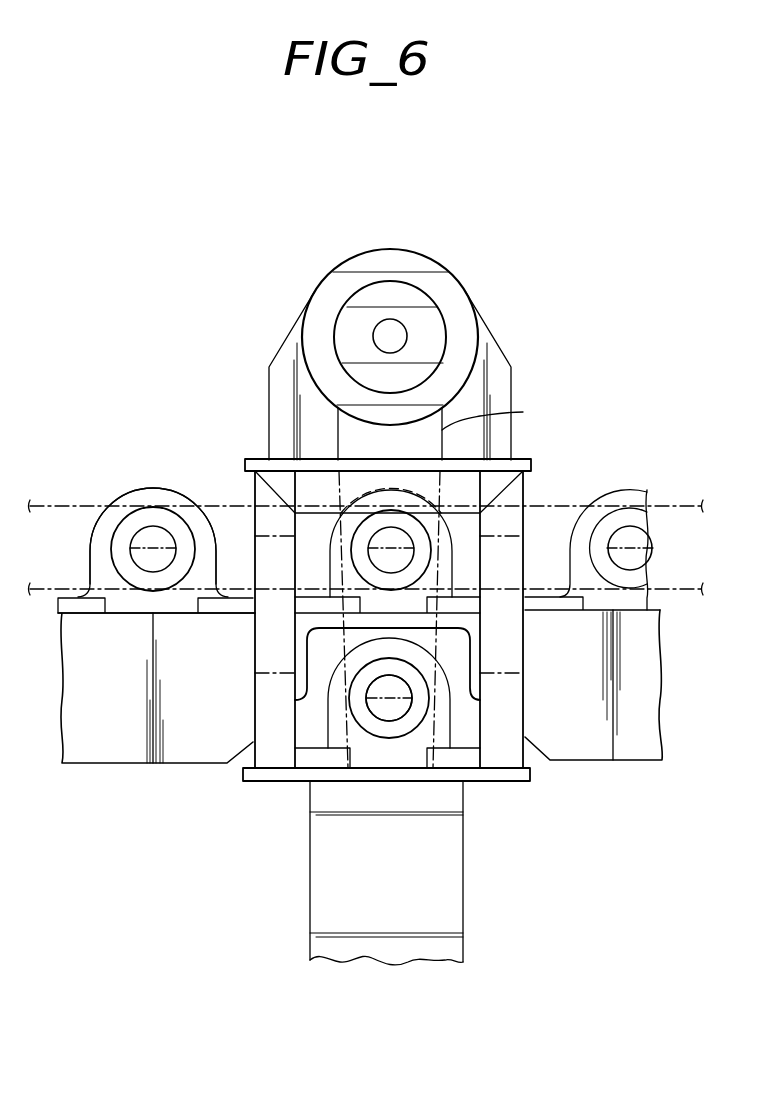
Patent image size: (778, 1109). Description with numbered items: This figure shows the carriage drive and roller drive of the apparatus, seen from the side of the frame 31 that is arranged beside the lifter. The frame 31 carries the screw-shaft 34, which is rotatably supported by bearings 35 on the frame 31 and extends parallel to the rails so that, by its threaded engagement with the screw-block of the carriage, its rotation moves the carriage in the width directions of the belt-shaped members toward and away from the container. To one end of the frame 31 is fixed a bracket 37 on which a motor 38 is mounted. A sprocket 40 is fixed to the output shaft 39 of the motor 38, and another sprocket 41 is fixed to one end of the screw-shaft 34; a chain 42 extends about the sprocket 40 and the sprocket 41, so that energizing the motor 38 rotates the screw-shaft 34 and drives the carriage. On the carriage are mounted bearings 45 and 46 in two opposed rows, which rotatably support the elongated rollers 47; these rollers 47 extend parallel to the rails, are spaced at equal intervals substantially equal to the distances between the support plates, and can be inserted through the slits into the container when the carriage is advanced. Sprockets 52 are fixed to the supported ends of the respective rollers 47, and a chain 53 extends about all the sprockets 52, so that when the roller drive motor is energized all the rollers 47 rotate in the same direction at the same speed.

The frame 31 is at (445, 867).
The screw-shaft 34 is at (392, 710).
The bearings 35 is at (335, 713).
The bracket 37 is at (505, 647).
The motor 38 is at (453, 297).
The output shaft 39 is at (390, 327).
The sprocket 40 is at (360, 297).
The sprocket 41 is at (422, 707).
The chain 42 is at (498, 415).
The bearings 45 is at (130, 490).
The bearings 46 is at (153, 536).
The elongated rollers 47 is at (138, 555).
The sprockets 52 is at (167, 520).
The chain 53 is at (562, 507).